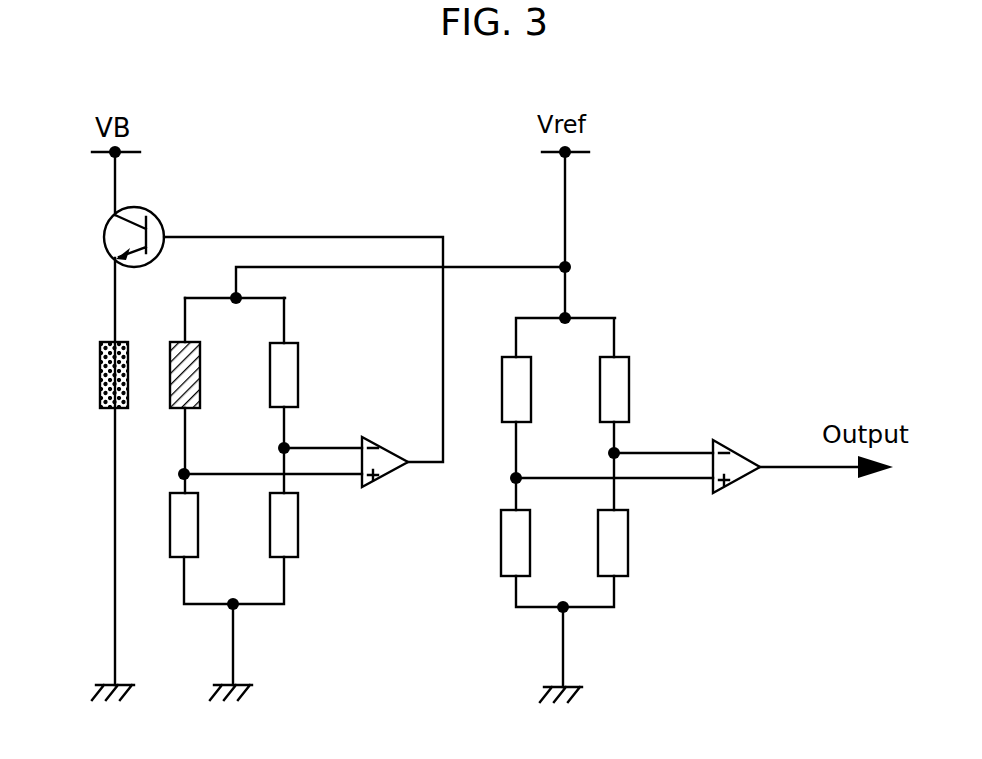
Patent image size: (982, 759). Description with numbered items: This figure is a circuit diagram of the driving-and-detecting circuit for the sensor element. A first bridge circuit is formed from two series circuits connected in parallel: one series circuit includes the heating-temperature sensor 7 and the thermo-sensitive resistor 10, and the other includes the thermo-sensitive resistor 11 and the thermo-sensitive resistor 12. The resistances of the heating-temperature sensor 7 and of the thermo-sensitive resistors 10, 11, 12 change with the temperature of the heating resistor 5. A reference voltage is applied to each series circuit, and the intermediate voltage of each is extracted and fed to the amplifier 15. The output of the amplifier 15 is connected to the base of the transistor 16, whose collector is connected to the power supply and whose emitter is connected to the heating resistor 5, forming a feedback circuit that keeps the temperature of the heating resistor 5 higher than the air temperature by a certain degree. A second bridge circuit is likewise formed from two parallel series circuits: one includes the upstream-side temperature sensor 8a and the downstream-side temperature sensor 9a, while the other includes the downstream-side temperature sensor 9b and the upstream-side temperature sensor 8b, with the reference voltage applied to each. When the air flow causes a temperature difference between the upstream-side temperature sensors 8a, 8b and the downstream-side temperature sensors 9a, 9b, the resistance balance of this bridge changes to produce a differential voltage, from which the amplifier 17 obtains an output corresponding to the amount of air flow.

The heating resistor 5 is at (100, 367).
The heating-temperature sensor 7 is at (170, 345).
The upstream-side temperature sensor 8a is at (505, 355).
The upstream-side temperature sensor 8b is at (628, 552).
The downstream-side temperature sensor 9a is at (501, 555).
The downstream-side temperature sensor 9b is at (629, 387).
The thermo-sensitive resistor 10 is at (170, 560).
The thermo-sensitive resistor 11 is at (298, 375).
The thermo-sensitive resistor 12 is at (298, 560).
The amplifier 15 is at (385, 478).
The transistor 16 is at (160, 218).
The amplifier 17 is at (732, 483).